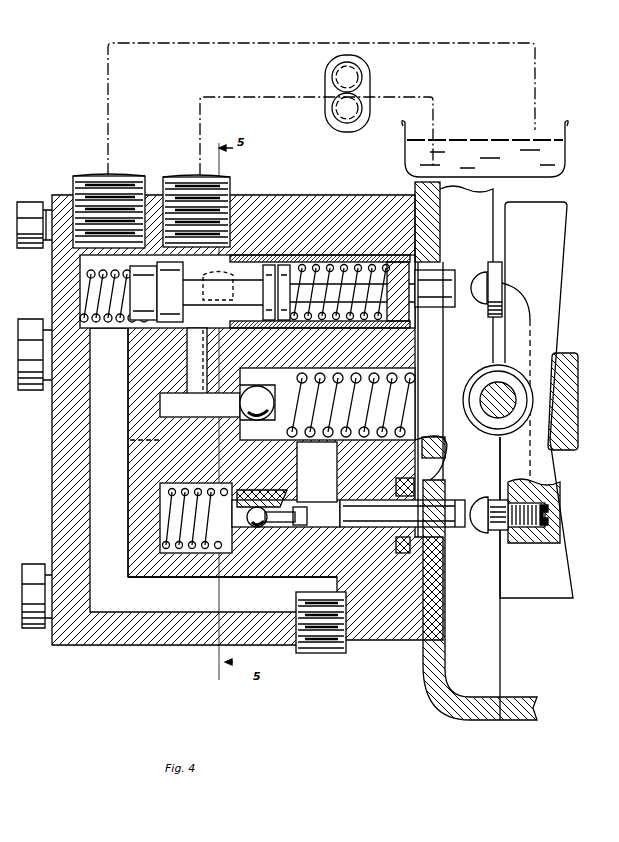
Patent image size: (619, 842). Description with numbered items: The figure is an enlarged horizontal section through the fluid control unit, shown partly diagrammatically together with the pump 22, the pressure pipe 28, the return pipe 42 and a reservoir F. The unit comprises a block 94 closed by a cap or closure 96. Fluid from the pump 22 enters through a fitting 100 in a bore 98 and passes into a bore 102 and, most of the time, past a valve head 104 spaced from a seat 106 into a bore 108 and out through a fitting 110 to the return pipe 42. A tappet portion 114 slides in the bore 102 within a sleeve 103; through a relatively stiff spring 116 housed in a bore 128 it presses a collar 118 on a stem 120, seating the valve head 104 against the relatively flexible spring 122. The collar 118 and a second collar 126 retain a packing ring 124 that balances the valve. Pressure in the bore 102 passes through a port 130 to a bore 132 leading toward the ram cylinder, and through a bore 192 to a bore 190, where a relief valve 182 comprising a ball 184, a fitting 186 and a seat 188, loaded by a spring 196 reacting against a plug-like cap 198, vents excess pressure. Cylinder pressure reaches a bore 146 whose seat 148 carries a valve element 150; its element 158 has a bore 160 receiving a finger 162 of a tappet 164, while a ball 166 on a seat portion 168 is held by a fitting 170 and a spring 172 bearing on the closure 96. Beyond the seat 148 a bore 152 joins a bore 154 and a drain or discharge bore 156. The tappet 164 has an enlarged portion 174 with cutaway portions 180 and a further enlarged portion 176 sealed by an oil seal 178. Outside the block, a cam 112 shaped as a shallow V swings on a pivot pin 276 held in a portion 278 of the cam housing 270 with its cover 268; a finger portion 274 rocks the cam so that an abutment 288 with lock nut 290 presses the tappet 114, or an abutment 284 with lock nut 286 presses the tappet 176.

The return pipe 42 is at (200, 43).
The pressure pipe 28 is at (272, 97).
The pump 22 is at (366, 80).
The fuel tank F is at (470, 147).
The fitting 110 is at (80, 178).
The valve head 104 is at (173, 247).
The bore 108 is at (80, 273).
The cap or closure 96 is at (63, 470).
The block 94 is at (305, 258).
The relatively flexible spring 122 is at (97, 293).
The bore 98 is at (197, 255).
The fitting 100 is at (230, 250).
The port 130 is at (218, 304).
The collar 118 is at (270, 262).
The bore 102 is at (283, 262).
The sleeve 103 is at (303, 262).
The relatively stiff spring 116 is at (343, 262).
The relief valve 182 is at (418, 310).
The seat 106 is at (163, 333).
The bore 192 is at (187, 375).
The bore 190 is at (187, 407).
The bore 132 is at (143, 440).
The bore 146 is at (175, 485).
The bore 128 is at (327, 395).
The seat 188 is at (248, 392).
The ball 184 is at (235, 359).
The packing ring 124 is at (265, 343).
The stem 120 is at (304, 343).
The collar 126 is at (265, 356).
The fitting 170 is at (196, 528).
The spring 172 is at (175, 566).
The valve element 150 is at (335, 545).
The bore 160 is at (253, 480).
The element 158 is at (255, 467).
The fitting 186 is at (255, 454).
The seat 148 is at (280, 454).
The bore 152 is at (283, 468).
The ball 166 is at (215, 476).
The seat portion 168 is at (247, 566).
The finger 162 is at (273, 566).
The bore 154 is at (335, 572).
The cutaway portions 180 is at (358, 466).
The enlarged portion 174 is at (402, 500).
The tappet 164 is at (338, 657).
The drain or discharge bore 156 is at (140, 608).
The further enlarged portion 176 is at (438, 554).
The oil seal 178 is at (443, 577).
The cam housing 270 is at (415, 200).
The cover or closure 268 is at (463, 697).
The spring 196 is at (415, 399).
The plug-like cap 198 is at (445, 450).
The tappet portion 114 is at (442, 273).
The abutment 288 is at (475, 275).
The lock nut 290 is at (498, 262).
The cam 112 is at (563, 268).
The finger portion 274 is at (563, 357).
The pivot pin 276 is at (548, 470).
The portion 278 is at (548, 483).
The lock nut 286 is at (498, 500).
The adjustable abutment 284 is at (460, 533).